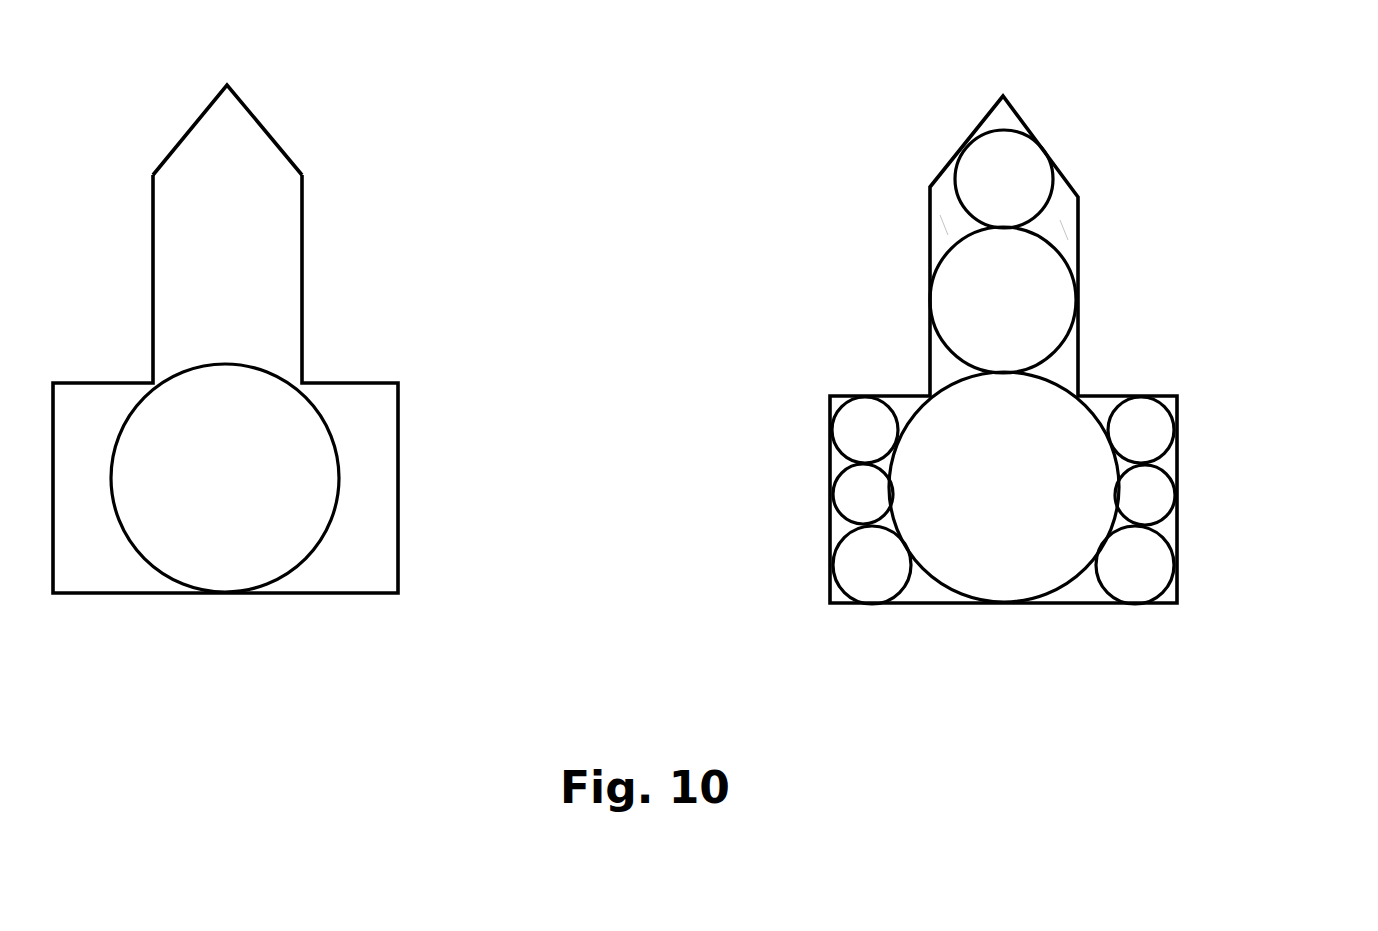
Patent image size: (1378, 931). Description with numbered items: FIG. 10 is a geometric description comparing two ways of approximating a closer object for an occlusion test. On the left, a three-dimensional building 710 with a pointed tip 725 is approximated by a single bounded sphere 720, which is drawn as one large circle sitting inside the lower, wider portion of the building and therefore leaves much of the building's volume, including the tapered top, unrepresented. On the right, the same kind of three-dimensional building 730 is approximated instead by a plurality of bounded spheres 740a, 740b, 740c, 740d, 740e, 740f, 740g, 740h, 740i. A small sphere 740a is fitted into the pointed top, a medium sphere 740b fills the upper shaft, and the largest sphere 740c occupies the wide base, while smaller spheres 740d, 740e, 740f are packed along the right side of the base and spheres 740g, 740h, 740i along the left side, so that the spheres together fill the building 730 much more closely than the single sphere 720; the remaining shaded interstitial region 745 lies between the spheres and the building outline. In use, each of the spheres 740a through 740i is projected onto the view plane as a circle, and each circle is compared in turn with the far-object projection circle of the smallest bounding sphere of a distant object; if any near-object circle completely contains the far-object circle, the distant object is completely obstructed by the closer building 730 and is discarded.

The preform body 710 is at (302, 230).
The single bounded sphere 720 is at (320, 537).
The tapered tip 725 is at (247, 147).
The 3-dimensional building 730 is at (927, 230).
The filler material 745 is at (953, 223).
The bounded sphere 740a is at (1030, 128).
The bounded sphere 740b is at (1057, 240).
The bounded sphere 740c is at (1092, 398).
The bounded sphere 740d is at (1170, 397).
The bounded sphere 740e is at (1177, 460).
The bounded sphere 740f is at (1177, 533).
The bounded sphere 740g is at (832, 396).
The bounded sphere 740h is at (833, 470).
The bounded sphere 740i is at (833, 533).